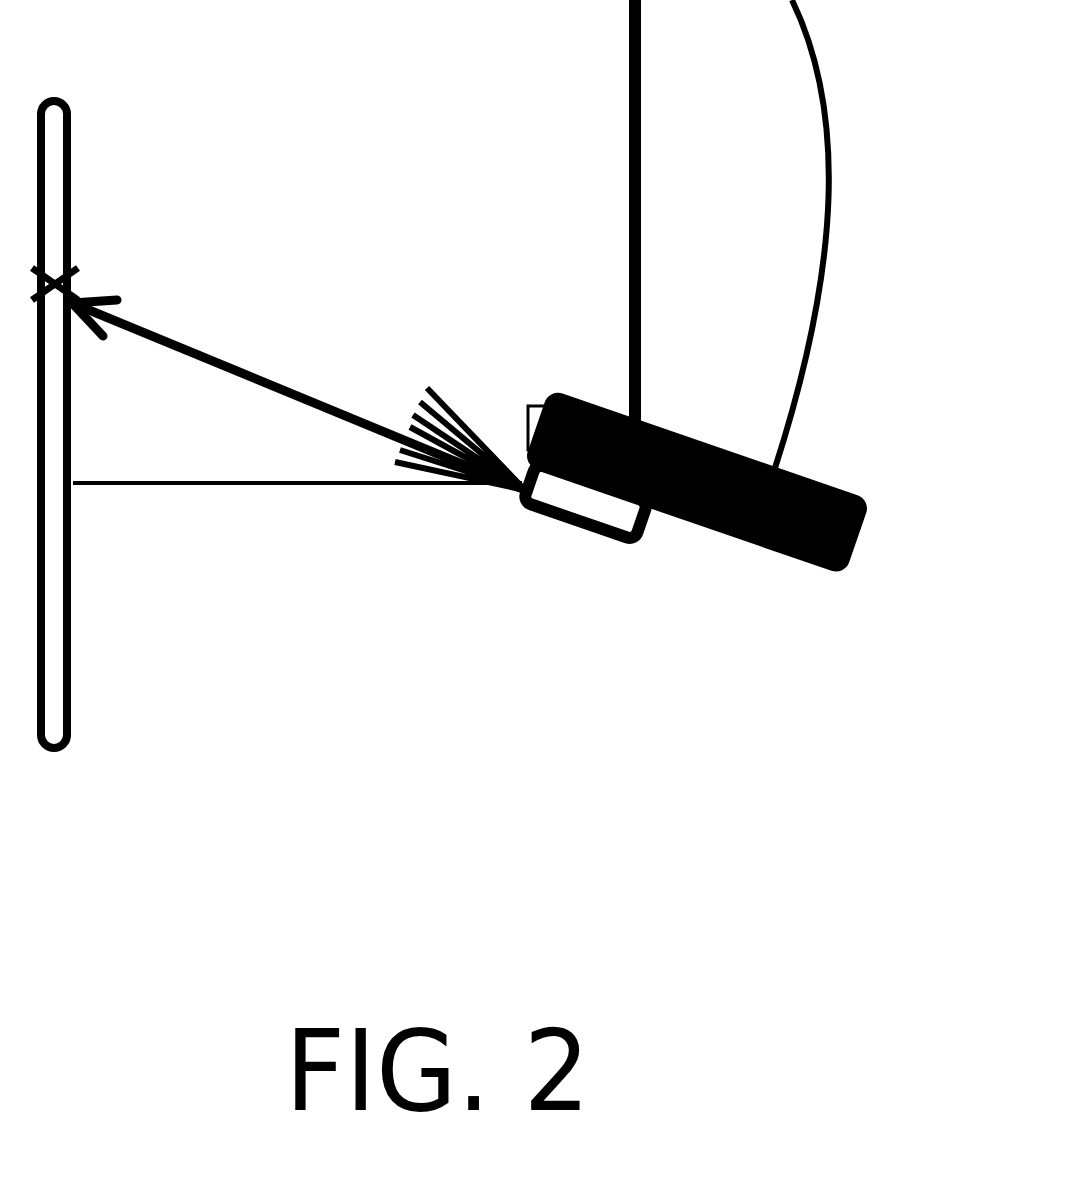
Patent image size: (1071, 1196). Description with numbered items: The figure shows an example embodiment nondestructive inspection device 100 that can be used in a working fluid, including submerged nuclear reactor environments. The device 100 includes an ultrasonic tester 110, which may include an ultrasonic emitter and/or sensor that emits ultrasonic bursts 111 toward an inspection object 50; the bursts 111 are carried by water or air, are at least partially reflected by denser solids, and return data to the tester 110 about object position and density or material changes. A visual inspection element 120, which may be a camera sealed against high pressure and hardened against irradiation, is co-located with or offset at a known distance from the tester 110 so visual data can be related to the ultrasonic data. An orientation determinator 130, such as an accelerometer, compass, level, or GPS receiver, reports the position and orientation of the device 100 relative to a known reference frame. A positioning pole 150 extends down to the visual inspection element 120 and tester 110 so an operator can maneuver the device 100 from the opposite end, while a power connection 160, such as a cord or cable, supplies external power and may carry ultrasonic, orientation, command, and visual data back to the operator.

The inspection object 50 is at (54, 182).
The nondestructive inspection device 100 is at (685, 781).
The ultrasonic tester 110 is at (553, 538).
The ultrasonic bursts 111 is at (427, 388).
The visual inspection element 120 is at (540, 400).
The orientation determinator 130 is at (765, 553).
The positioning pole 150 is at (629, 72).
The power connection 160 is at (828, 212).